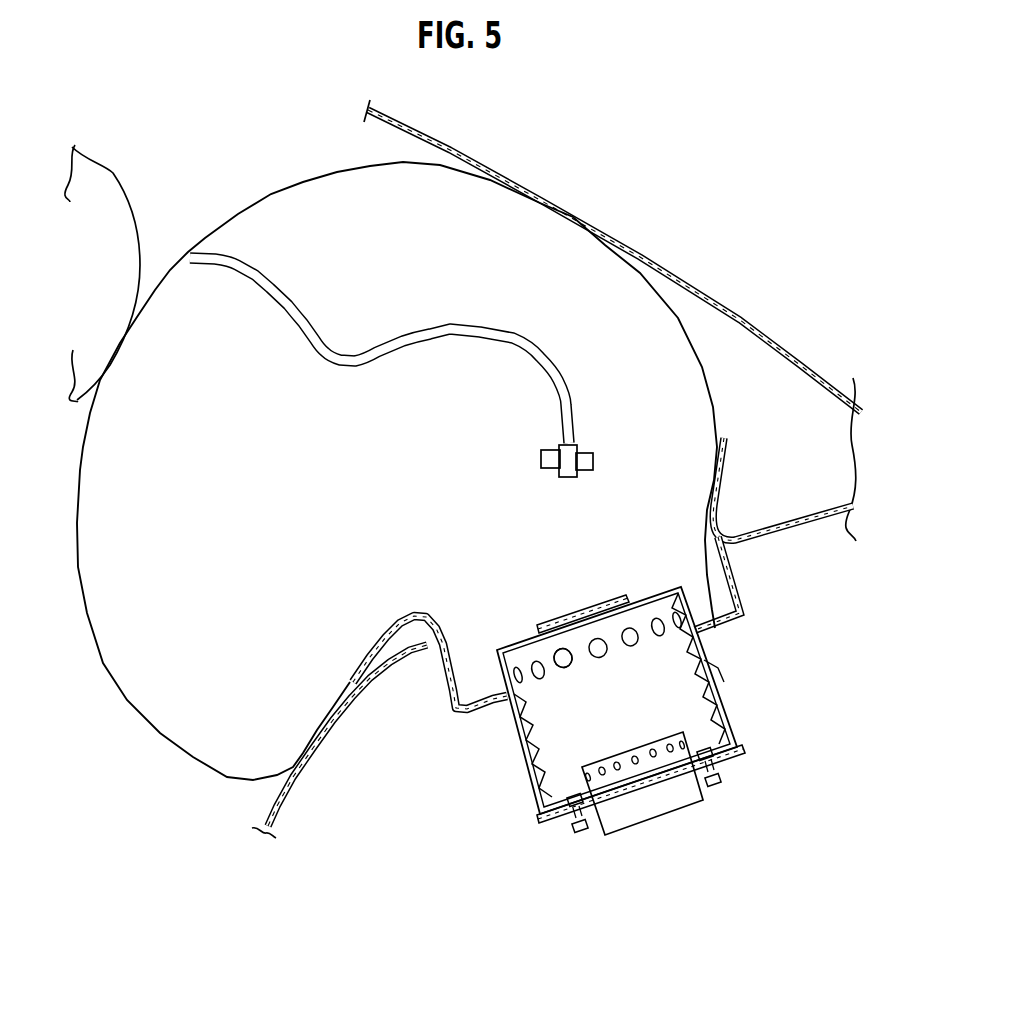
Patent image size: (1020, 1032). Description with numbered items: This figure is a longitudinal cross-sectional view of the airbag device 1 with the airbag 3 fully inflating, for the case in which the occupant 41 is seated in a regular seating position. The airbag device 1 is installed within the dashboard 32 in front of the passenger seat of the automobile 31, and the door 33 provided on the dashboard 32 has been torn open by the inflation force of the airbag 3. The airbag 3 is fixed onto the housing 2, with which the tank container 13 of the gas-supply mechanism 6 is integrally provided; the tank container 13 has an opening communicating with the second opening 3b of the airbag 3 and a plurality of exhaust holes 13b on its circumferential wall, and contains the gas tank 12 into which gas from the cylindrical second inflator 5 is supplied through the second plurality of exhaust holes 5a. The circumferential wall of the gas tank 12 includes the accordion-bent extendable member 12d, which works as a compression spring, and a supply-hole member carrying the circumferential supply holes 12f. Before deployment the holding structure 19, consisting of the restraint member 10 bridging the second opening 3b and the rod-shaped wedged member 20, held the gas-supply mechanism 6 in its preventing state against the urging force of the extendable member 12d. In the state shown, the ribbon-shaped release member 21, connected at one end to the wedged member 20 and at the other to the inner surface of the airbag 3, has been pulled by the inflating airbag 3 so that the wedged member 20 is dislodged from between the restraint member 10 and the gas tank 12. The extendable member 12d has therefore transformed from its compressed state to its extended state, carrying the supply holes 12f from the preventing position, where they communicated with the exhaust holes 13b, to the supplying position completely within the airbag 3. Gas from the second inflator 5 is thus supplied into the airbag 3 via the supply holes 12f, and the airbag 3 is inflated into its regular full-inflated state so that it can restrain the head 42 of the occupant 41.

The airbag device 1 is at (765, 609).
The housing 2 is at (735, 715).
The airbag 3 is at (260, 200).
The second opening 3b is at (693, 634).
The second inflator 5 is at (655, 808).
The second plurality of exhaust holes 5a is at (634, 762).
The gas-supply mechanism 6 is at (539, 825).
The restraint member 10 is at (557, 623).
The gas tank 12 is at (648, 592).
The extendable member 12d is at (535, 800).
The supply holes 12f is at (568, 667).
The tank container 13 is at (742, 752).
The exhaust holes 13b is at (718, 668).
The holding structure 19 is at (587, 600).
The wedged member 20 is at (540, 458).
The release member 21 is at (567, 395).
The automobile 31 is at (765, 328).
The dashboard 32 is at (268, 819).
The door 33 is at (717, 477).
The occupant 41 is at (116, 174).
The head 42 is at (116, 174).